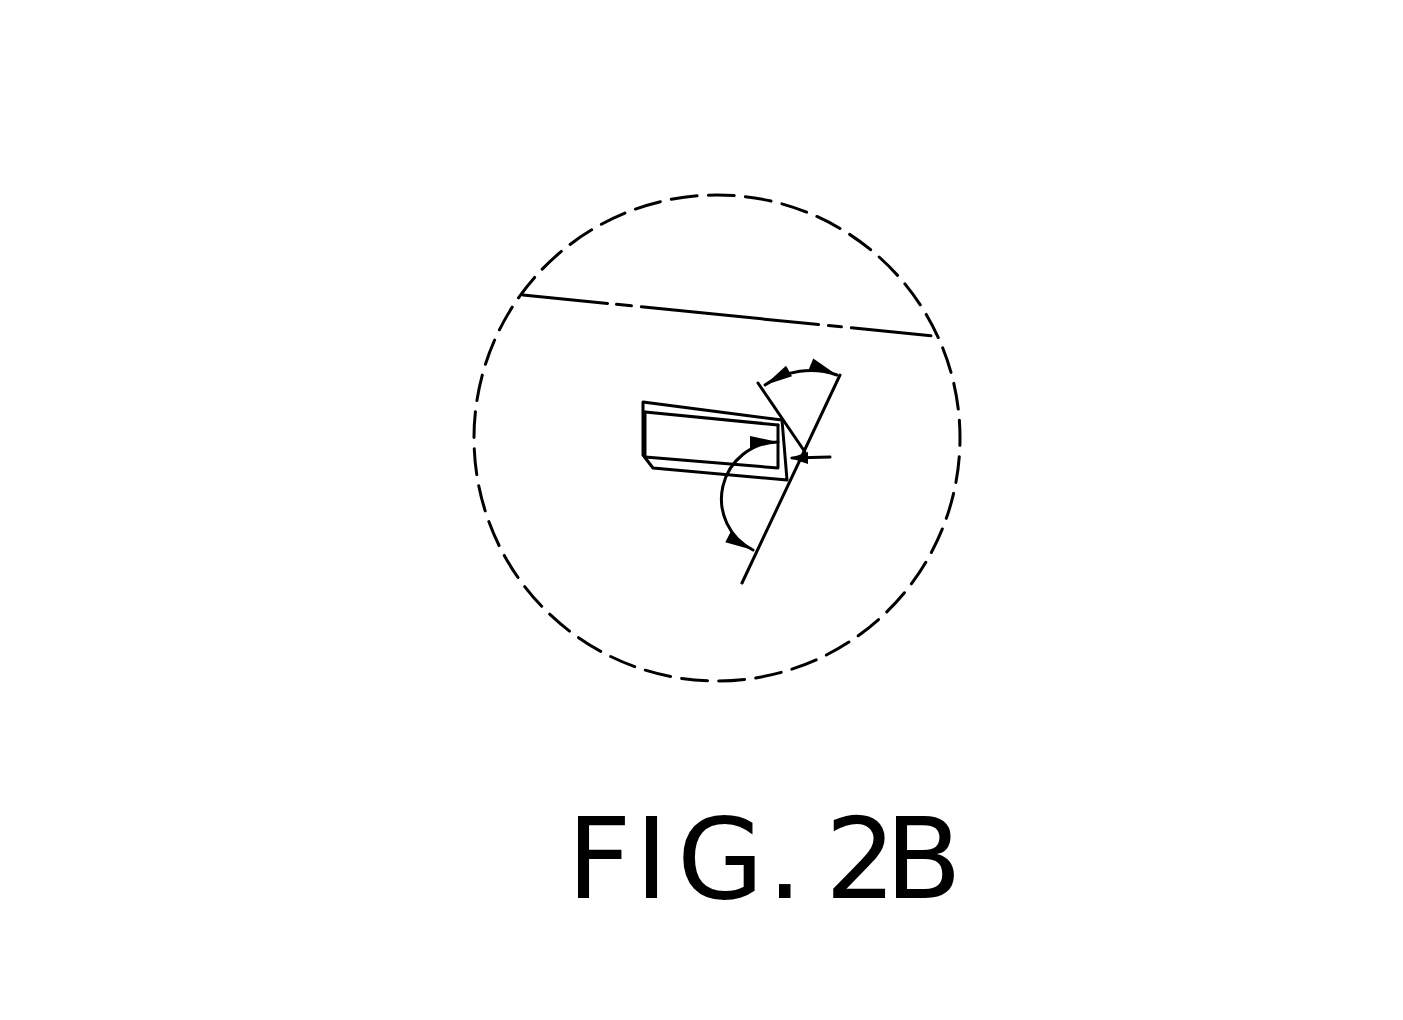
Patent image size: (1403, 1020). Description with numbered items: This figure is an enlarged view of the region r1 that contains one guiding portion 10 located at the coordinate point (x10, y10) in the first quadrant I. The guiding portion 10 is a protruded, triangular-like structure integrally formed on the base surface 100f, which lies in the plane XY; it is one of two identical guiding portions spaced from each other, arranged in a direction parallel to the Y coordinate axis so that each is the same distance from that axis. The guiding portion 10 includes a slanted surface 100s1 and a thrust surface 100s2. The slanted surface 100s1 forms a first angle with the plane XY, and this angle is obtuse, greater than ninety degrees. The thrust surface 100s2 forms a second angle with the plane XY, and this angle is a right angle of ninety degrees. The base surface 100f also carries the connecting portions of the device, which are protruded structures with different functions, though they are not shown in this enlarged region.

The base surface 100f is at (567, 567).
The slanted surface 100s1 is at (678, 437).
The thrust surface 100s2 is at (735, 415).
The guiding portion 10 is at (802, 466).
The region r1 is at (265, 103).
The first quadrant I is at (872, 582).